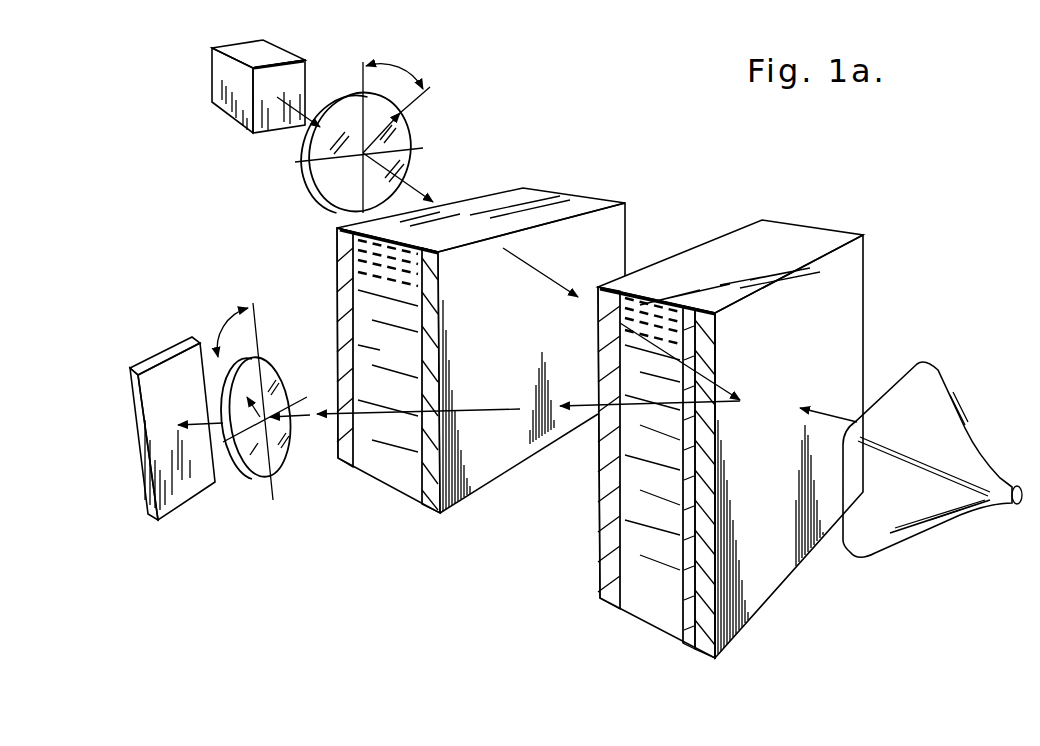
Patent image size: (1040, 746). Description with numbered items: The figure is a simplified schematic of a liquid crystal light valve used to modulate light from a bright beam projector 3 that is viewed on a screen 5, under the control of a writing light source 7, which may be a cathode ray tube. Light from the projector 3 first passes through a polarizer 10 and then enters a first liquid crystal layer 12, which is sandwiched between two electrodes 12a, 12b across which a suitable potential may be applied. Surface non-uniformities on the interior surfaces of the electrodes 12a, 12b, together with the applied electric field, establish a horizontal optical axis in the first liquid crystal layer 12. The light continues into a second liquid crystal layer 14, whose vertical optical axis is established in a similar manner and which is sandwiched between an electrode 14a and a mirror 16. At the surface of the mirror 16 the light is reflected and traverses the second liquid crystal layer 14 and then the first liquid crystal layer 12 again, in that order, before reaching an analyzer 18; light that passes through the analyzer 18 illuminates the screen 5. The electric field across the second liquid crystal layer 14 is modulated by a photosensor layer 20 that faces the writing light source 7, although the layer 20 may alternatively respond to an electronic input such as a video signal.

The bright beam projector 3 is at (212, 48).
The polarizer 10 is at (312, 197).
The first liquid crystal layer 12 is at (383, 475).
The electrode 12a is at (435, 502).
The electrode 12b is at (340, 458).
The second liquid crystal layer 14 is at (648, 617).
The electrode 14a is at (602, 597).
The mirror 16 is at (687, 647).
The photosensor layer 20 is at (708, 662).
The writing light source 7 is at (930, 368).
The screen 5 is at (189, 338).
The analyzer 18 is at (281, 370).